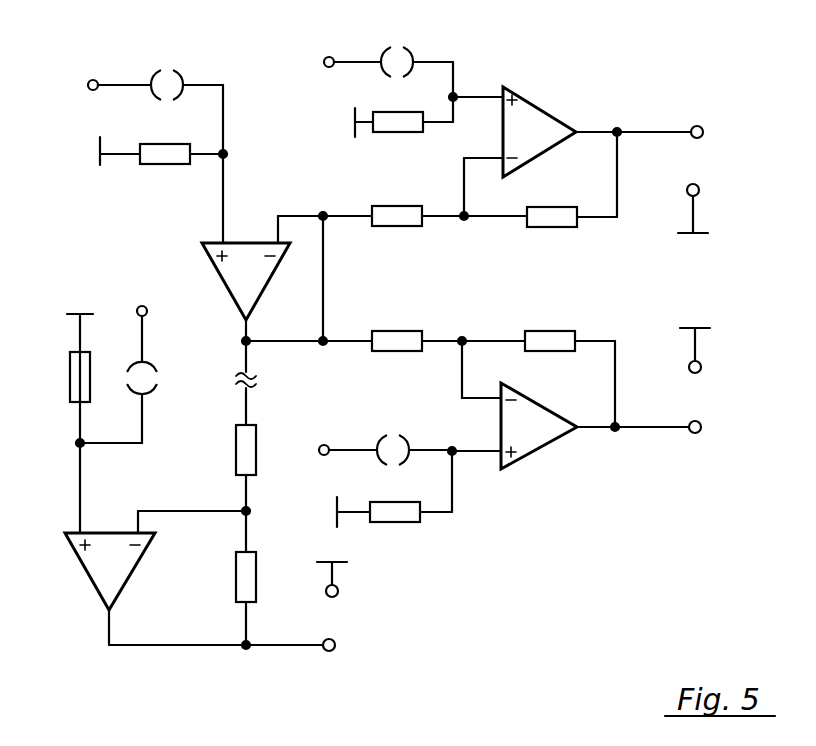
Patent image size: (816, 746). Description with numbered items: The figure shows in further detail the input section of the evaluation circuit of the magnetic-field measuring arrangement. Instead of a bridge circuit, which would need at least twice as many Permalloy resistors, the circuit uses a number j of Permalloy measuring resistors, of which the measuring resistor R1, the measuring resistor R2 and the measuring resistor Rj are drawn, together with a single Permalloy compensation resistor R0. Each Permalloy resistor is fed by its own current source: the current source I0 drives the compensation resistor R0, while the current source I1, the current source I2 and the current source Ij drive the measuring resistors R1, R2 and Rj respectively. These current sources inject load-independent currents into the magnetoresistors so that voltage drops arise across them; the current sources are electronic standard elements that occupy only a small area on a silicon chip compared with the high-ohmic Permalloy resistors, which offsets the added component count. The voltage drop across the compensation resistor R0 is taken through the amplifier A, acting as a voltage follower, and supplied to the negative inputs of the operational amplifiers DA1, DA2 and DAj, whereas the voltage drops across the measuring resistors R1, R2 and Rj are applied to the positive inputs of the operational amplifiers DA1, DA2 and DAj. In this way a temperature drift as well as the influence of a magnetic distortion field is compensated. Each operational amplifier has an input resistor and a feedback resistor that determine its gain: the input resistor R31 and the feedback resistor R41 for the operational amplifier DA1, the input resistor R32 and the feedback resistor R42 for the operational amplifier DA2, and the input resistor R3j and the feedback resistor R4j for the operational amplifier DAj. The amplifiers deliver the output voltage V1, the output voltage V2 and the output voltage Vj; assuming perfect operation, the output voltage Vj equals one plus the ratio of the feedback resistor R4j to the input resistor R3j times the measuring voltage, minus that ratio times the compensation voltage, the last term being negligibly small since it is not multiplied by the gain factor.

The current source I0 is at (155, 140).
The Permalloy-compensation resistor R0 is at (163, 141).
The voltage follower amplifier A is at (287, 292).
The input resistor R31 is at (395, 201).
The feedback resistor R41 is at (540, 179).
The operational amplifier DA1 is at (572, 151).
The output voltage V1 is at (704, 179).
The current source I1 is at (390, 67).
The Permalloy measuring resistor R1 is at (404, 111).
The input resistor R32 is at (447, 328).
The feedback resistor R42 is at (569, 364).
The operational amplifier DA2 is at (570, 405).
The output voltage V2 is at (705, 380).
The current source I2 is at (387, 461).
The Permalloy measuring resistor R2 is at (394, 501).
The Permalloy measuring resistor Rj is at (62, 423).
The current source Ij is at (134, 374).
The input resistor R3j is at (219, 462).
The feedback resistor R4j is at (217, 600).
The operational amplifier DAj is at (194, 578).
The output voltage Vj is at (339, 606).